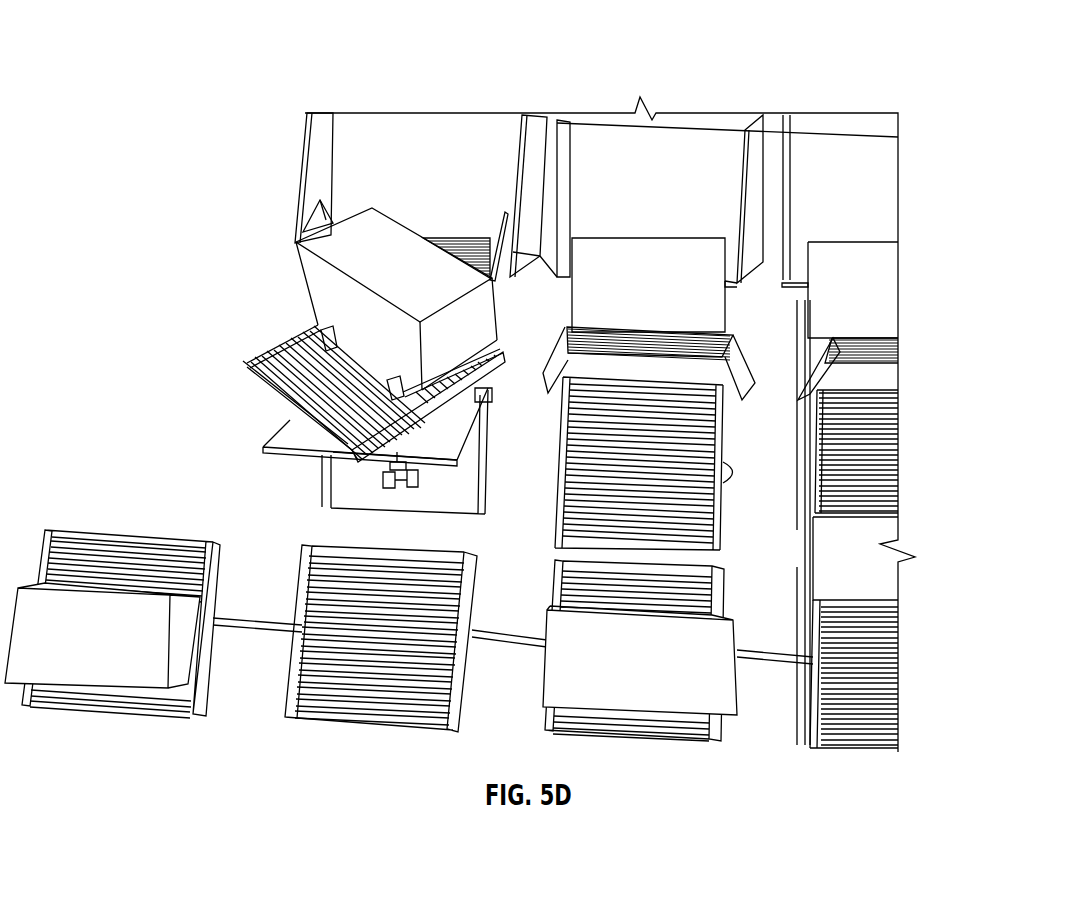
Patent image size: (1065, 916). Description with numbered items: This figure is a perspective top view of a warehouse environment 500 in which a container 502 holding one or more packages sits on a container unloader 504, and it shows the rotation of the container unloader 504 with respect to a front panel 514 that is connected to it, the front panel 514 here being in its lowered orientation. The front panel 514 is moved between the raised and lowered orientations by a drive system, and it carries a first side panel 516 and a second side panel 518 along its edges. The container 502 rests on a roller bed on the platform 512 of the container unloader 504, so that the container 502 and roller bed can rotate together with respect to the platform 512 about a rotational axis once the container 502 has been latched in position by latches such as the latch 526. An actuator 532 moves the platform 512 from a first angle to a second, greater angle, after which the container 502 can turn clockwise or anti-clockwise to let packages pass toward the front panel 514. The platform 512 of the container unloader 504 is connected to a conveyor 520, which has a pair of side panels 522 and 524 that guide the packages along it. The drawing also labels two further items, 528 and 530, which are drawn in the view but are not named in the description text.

The warehouse environment 500 is at (216, 176).
The container 502 is at (378, 258).
The container unloader 504 is at (280, 372).
The platform 512 is at (282, 427).
The front panel 514 is at (469, 246).
The first side panel 516 is at (320, 227).
The second side panel 518 is at (527, 252).
The conveyor 520 is at (406, 182).
The side panel 522 is at (513, 250).
The side panel 524 is at (318, 185).
The latch 526 is at (352, 447).
The stop 528 is at (310, 320).
The roller conveyor 530 is at (360, 626).
The actuator 532 is at (388, 475).